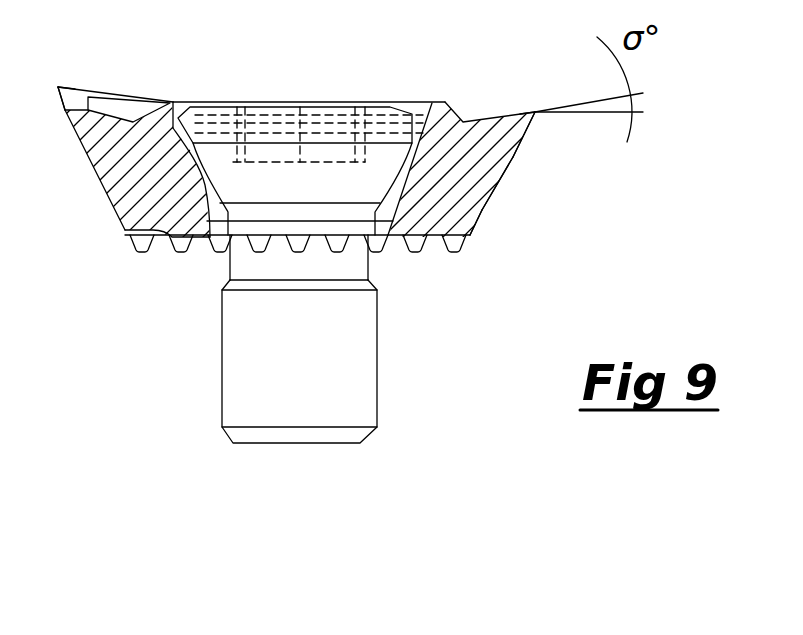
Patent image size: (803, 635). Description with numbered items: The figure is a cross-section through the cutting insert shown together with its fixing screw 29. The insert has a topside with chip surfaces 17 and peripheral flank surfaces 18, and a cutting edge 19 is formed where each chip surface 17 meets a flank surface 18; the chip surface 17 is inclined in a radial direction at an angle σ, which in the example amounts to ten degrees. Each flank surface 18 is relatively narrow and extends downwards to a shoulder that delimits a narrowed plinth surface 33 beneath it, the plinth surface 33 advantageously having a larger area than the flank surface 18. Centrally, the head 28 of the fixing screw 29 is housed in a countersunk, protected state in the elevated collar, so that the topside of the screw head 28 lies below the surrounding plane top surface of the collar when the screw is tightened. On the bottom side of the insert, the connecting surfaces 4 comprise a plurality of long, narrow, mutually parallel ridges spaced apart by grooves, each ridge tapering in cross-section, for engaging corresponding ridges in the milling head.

The connecting surface 4 is at (417, 258).
The chip surface 17 is at (75, 95).
The flank surface 18 is at (517, 157).
The cutting edge 19 is at (65, 110).
The screw head 28 is at (405, 107).
The fixing screw 29 is at (218, 344).
The plinth surface 33 is at (488, 205).